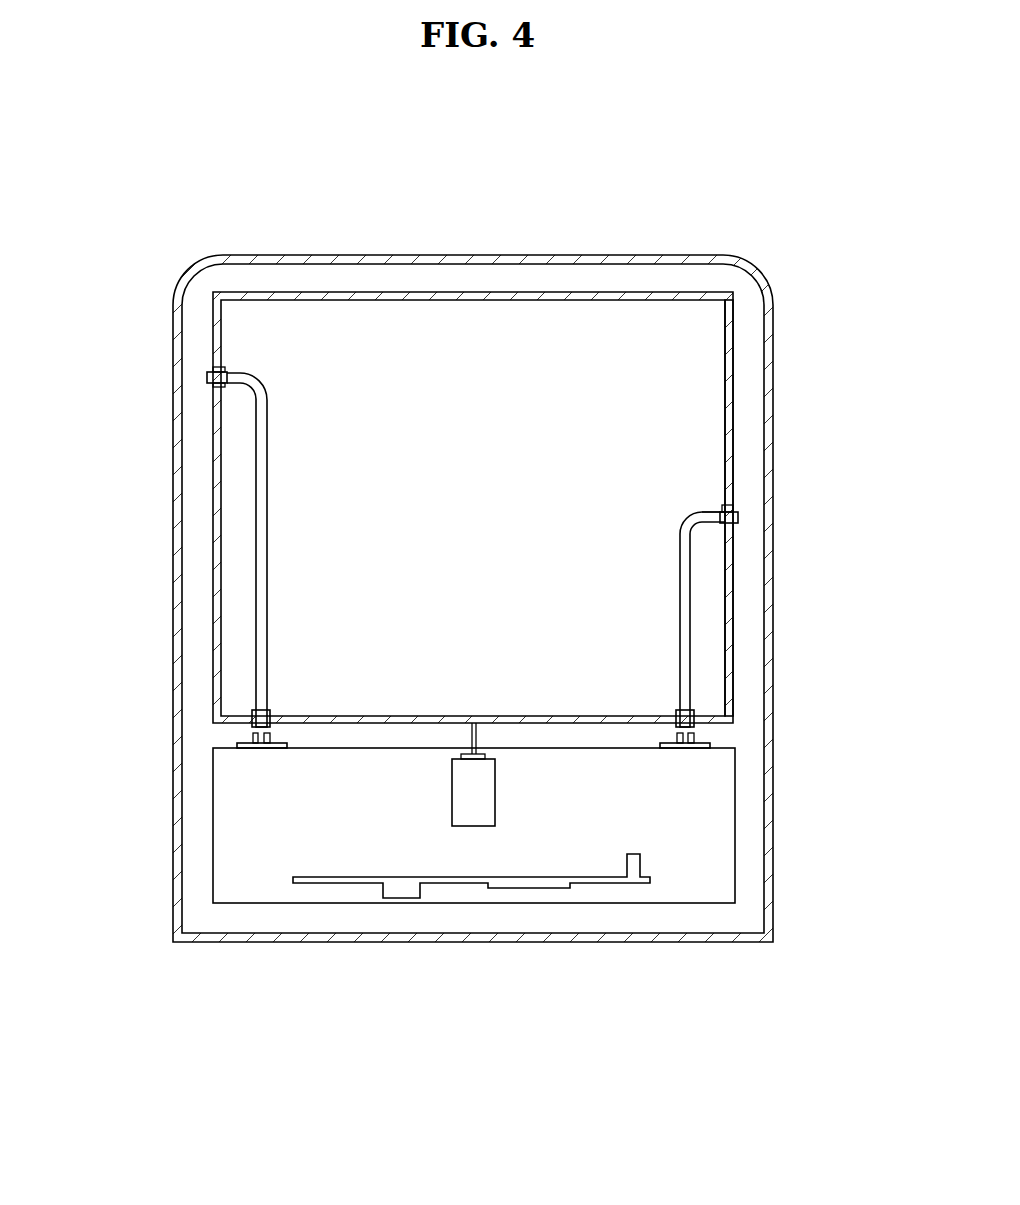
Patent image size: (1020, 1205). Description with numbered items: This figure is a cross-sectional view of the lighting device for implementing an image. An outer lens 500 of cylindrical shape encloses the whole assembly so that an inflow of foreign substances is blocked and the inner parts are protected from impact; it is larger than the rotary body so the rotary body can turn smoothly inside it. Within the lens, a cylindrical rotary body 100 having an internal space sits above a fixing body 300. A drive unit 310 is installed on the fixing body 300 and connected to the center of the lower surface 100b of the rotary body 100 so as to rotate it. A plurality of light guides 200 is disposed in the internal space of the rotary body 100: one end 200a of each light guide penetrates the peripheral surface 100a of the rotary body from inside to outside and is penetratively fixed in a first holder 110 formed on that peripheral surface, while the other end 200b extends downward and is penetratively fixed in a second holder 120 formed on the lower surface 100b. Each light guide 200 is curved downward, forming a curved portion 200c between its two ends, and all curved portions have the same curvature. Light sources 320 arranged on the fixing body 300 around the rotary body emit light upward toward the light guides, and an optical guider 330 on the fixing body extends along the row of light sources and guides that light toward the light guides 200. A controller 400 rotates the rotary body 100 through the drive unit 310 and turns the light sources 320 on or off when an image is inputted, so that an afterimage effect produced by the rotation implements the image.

The outer lens 500 is at (245, 250).
The rotary body 100 is at (212, 483).
The peripheral surface 100a is at (732, 382).
The lower surface 100b is at (362, 720).
The first holder 110 is at (217, 368).
The second holder 120 is at (252, 712).
The light source 320 is at (237, 745).
The optical guider 330 is at (243, 752).
The fixing body 300 is at (748, 837).
The drive unit 310 is at (477, 812).
The controller 400 is at (398, 888).
The light guide 200 is at (685, 622).
The one end of light guide 200a is at (738, 515).
The other end of light guide 200b is at (690, 731).
The curved portion 200c is at (695, 512).